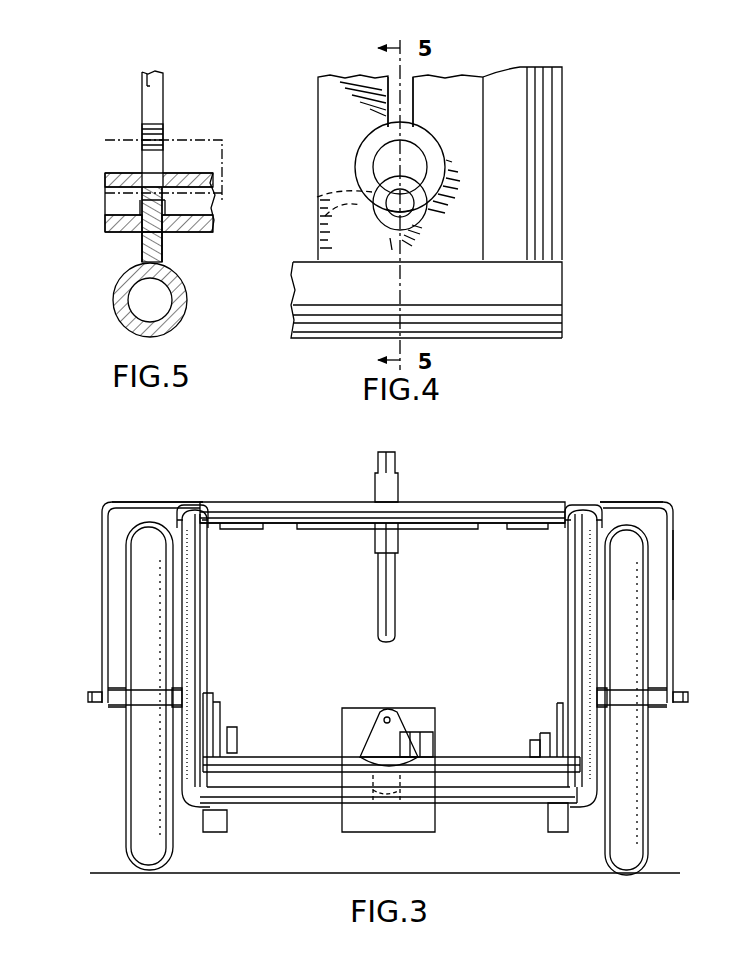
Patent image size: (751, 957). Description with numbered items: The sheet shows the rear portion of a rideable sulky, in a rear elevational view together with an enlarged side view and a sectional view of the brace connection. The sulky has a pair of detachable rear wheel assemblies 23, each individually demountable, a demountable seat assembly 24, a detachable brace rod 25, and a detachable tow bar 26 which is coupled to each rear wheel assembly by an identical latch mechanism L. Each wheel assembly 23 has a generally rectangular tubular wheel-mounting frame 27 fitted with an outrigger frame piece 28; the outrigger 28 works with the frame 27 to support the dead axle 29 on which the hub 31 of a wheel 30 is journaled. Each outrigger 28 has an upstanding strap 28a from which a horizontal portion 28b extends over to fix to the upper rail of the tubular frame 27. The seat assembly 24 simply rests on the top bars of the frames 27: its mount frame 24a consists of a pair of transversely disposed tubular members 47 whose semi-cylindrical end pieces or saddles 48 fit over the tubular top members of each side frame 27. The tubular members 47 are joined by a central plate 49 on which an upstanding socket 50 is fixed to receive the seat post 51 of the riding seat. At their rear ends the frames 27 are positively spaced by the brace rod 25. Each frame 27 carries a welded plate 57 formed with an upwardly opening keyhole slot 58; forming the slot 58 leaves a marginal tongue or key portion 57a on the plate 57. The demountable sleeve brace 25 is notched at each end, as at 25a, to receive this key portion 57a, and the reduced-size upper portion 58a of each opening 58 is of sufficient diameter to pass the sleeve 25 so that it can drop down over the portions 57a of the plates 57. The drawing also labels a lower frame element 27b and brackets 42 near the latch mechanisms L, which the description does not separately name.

In FIG. 3, the rear wheel assembly 23 is at (122, 713).
In FIG. 3, the seat assembly 24 is at (410, 502).
In FIG. 3, the mount frame 24a is at (525, 502).
In FIG. 5, the brace rod 25 is at (105, 178).
In FIG. 4, the brace rod 25 is at (380, 224).
In FIG. 3, the brace rod 25 is at (290, 757).
In FIG. 5, the notch 25a is at (140, 205).
In FIG. 4, the notch 25a is at (317, 200).
In FIG. 3, the tow bar 26 is at (512, 808).
In FIG. 4, the tubular wheel-mounting frame 27 is at (553, 165).
In FIG. 3, the tubular wheel-mounting frame 27 is at (207, 590).
In FIG. 5, the frame base tube 27b is at (187, 302).
In FIG. 4, the frame base tube 27b is at (545, 295).
In FIG. 3, the outrigger frame piece 28 is at (673, 590).
In FIG. 3, the upstanding strap 28a is at (673, 545).
In FIG. 3, the horizontal portion 28b is at (130, 502).
In FIG. 3, the dead axle 29 is at (88, 695).
In FIG. 3, the wheel 30 is at (128, 790).
In FIG. 3, the hub 31 is at (180, 690).
In FIG. 3, the latch bracket 42 is at (214, 705).
In FIG. 3, the latch mechanism L is at (237, 725).
In FIG. 3, the tubular members 47 is at (330, 503).
In FIG. 3, the saddles 48 is at (185, 512).
In FIG. 3, the central plate 49 is at (398, 530).
In FIG. 3, the socket 50 is at (398, 478).
In FIG. 3, the seat post 51 is at (395, 606).
In FIG. 5, the plate 57 is at (163, 100).
In FIG. 4, the plate 57 is at (332, 145).
In FIG. 5, the key portion 57a is at (150, 240).
In FIG. 4, the key portion 57a is at (393, 242).
In FIG. 5, the keyhole slot 58 is at (146, 133).
In FIG. 4, the keyhole slot 58 is at (427, 140).
In FIG. 5, the upper portion of opening 58a is at (140, 84).
In FIG. 4, the upper portion of opening 58a is at (385, 110).